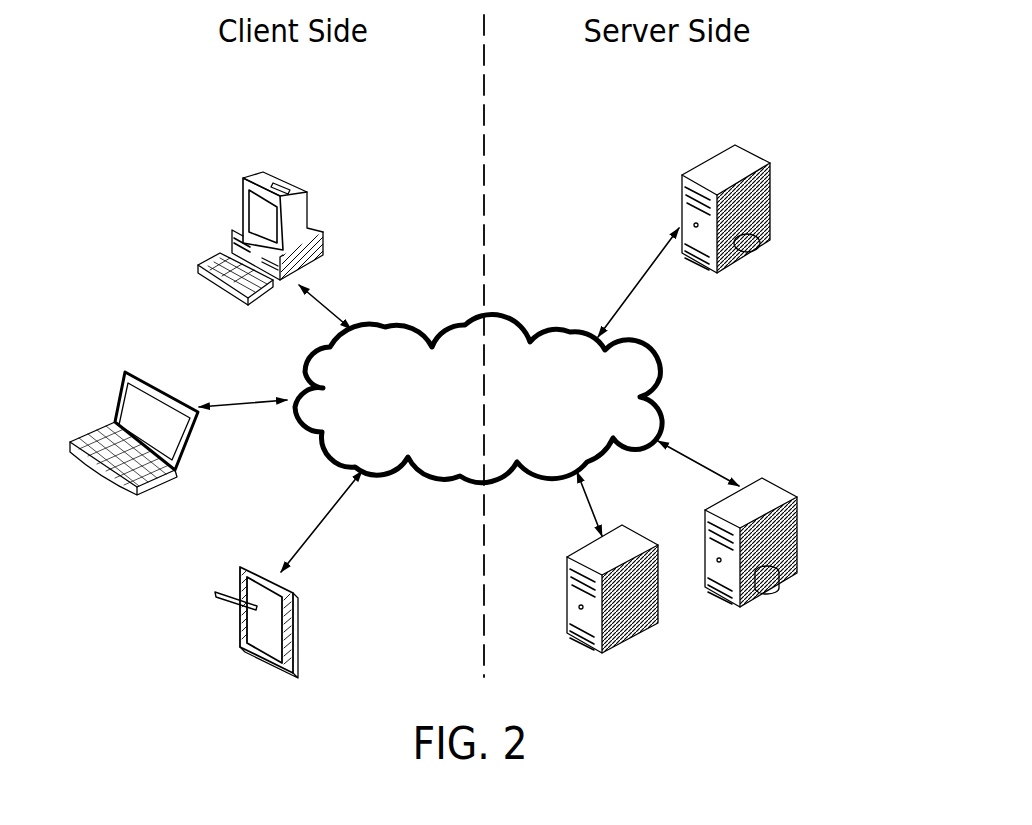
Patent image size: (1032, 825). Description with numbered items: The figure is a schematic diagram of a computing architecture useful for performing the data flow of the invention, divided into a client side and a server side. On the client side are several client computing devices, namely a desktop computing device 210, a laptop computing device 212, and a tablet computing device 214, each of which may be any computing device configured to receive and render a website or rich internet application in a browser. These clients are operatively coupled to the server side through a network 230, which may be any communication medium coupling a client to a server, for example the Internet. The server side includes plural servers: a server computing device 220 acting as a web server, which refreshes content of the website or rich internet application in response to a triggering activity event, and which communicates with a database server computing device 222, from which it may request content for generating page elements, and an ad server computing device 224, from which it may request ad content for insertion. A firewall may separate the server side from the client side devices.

The desktop computing device 210 is at (240, 180).
The laptop computing device 212 is at (117, 388).
The tablet computing device 214 is at (240, 648).
The server computing device 220 is at (680, 175).
The database server computing device 222 is at (797, 527).
The ad server computing device 224 is at (613, 653).
The network 230 is at (665, 398).